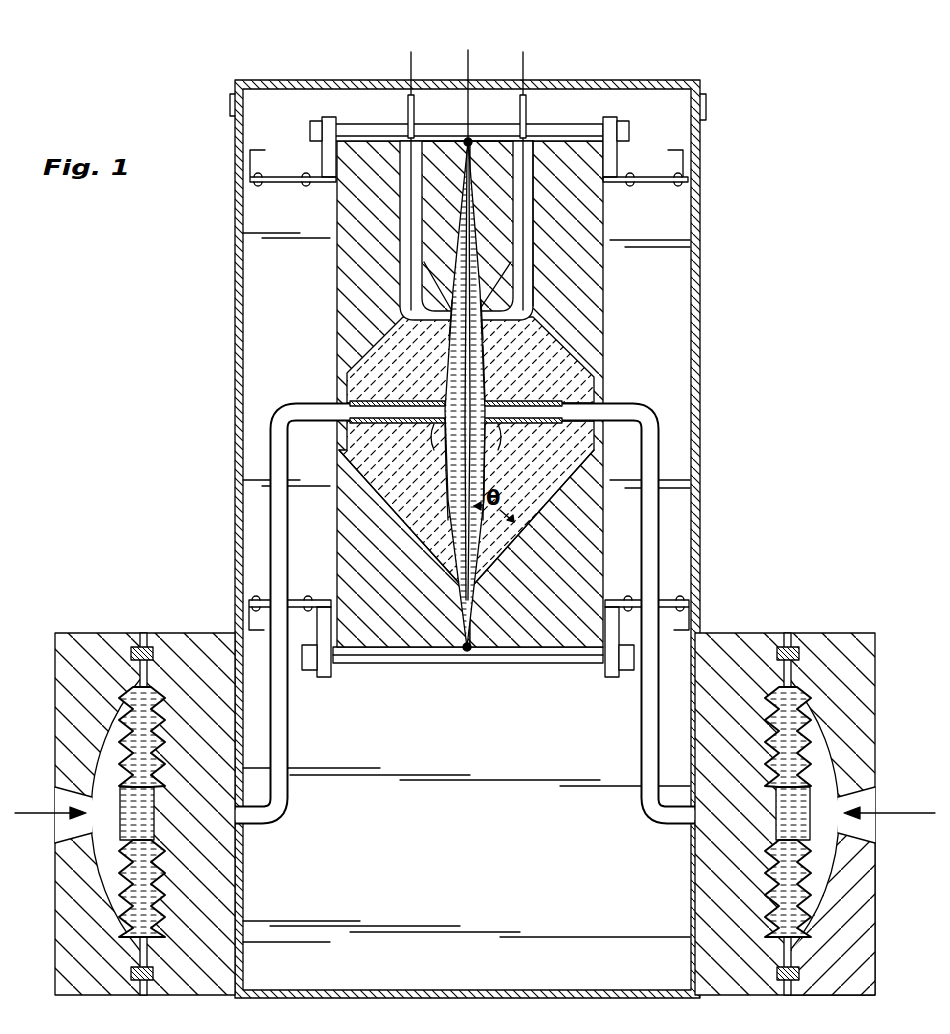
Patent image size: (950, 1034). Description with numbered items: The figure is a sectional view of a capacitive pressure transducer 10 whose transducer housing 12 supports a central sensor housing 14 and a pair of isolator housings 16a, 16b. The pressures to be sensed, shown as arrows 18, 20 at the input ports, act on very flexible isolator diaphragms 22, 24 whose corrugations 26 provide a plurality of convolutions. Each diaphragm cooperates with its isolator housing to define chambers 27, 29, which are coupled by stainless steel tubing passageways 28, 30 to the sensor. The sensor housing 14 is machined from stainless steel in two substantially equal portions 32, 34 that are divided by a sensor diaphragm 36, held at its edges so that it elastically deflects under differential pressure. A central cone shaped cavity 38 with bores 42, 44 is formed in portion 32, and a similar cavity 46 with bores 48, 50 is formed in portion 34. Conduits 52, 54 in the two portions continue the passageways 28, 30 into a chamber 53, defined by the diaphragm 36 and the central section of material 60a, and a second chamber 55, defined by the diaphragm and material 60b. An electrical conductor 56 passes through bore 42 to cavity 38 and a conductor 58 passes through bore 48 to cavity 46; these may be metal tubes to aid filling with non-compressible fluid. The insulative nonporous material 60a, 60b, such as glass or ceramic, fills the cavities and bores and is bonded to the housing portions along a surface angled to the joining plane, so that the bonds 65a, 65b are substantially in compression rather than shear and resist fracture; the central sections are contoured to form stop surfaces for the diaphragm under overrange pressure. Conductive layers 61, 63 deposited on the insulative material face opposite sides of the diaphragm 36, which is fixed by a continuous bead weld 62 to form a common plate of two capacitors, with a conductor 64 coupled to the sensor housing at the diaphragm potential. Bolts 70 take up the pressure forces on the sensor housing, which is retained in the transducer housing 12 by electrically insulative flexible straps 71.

The transducer 10 is at (724, 197).
The transducer housing 12 is at (243, 442).
The sensor housing 14 is at (605, 240).
The isolator housing 16a is at (108, 633).
The isolator housing 16b is at (815, 633).
The pressure 18 is at (30, 812).
The pressure 20 is at (905, 812).
The isolator diaphragm 22 is at (122, 903).
The isolator diaphragm 24 is at (805, 690).
The corrugations 26 is at (125, 708).
The chamber 27 is at (158, 888).
The passageway 28 is at (383, 402).
The chamber 29 is at (768, 838).
The passageway 30 is at (552, 402).
The housing portion 32 is at (398, 605).
The housing portion 34 is at (548, 612).
The sensor diaphragm 36 is at (484, 343).
The central cone shaped cavity 38 is at (372, 347).
The bore 42 is at (400, 203).
The bore 44 is at (325, 398).
The central cone shaped cavity 46 is at (548, 453).
The bore 48 is at (534, 170).
The bore 50 is at (644, 402).
The conduit 52 is at (432, 430).
The chamber 53 is at (450, 460).
The conduit 54 is at (502, 430).
The chamber 55 is at (482, 478).
The electrical conductor 56 is at (406, 100).
The conductor 58 is at (529, 115).
The insulative nonporous material 60a is at (428, 532).
The insulative nonporous material 60b is at (500, 530).
The electrically conductive layer 61 is at (450, 349).
The bead weld 62 is at (470, 140).
The electrically conductive layer 63 is at (482, 378).
The conductor 64 is at (470, 50).
The insulating material-metal interface 65a is at (418, 505).
The insulating material-metal interface 65b is at (512, 502).
The bolts 70 is at (320, 126).
The flexible straps 71 is at (648, 183).